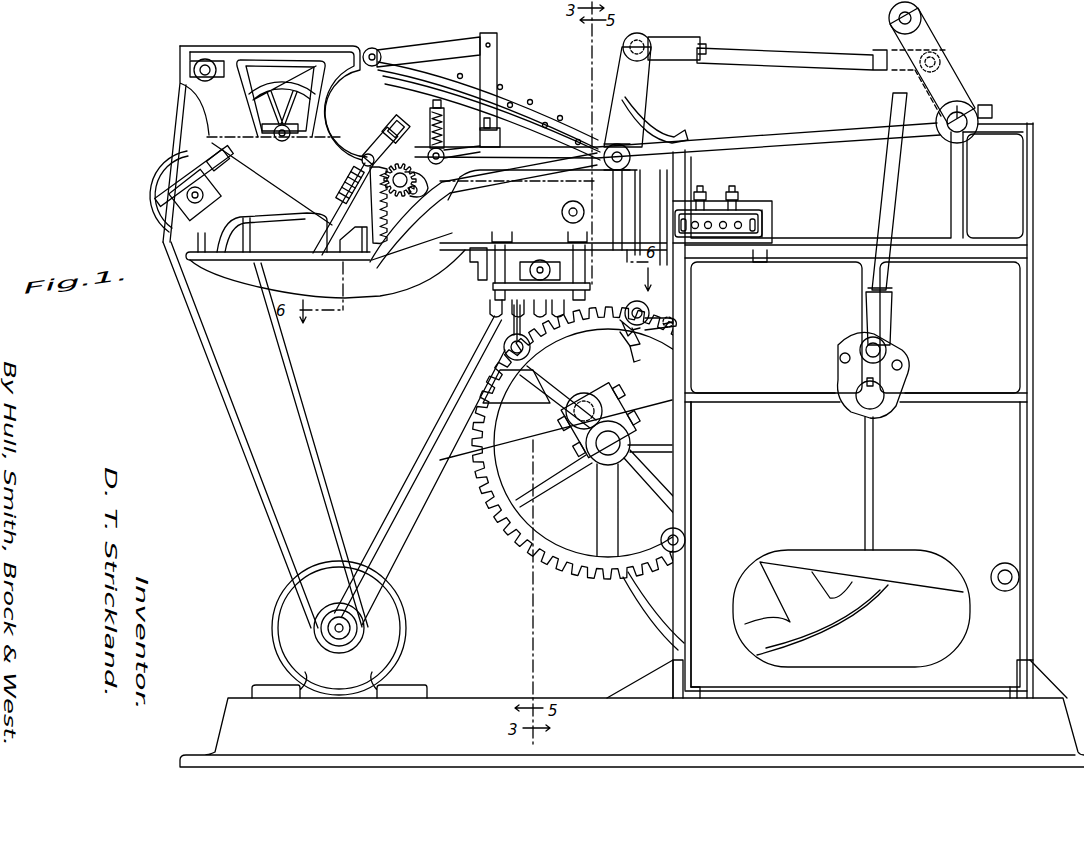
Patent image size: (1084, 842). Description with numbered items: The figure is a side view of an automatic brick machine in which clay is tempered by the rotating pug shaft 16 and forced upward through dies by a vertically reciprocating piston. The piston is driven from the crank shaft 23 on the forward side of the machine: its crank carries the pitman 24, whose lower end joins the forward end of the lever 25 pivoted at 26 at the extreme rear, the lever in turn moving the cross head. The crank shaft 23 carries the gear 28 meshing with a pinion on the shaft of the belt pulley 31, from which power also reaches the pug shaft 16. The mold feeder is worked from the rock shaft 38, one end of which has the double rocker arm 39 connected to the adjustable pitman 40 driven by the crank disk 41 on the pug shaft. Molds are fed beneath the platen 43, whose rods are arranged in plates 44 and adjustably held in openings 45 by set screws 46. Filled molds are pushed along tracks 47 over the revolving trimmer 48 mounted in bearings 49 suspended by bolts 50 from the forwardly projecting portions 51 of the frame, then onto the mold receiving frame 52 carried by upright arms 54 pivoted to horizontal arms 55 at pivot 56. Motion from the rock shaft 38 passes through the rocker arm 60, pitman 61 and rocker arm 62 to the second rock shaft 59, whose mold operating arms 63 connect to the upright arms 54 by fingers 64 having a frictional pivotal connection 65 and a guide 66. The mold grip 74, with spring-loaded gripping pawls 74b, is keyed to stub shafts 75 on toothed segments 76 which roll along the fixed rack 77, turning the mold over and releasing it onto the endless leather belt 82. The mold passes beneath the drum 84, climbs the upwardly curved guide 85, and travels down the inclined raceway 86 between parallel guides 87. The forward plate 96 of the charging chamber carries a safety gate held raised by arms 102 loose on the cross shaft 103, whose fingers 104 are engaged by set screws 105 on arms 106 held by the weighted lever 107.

The pug shaft 16 is at (860, 400).
The crank shaft 23 is at (620, 440).
The pitman 24 is at (680, 489).
The lever 25 is at (890, 572).
The pivot 26 is at (1019, 577).
The gear 28 is at (478, 458).
The belt pulley 31 is at (650, 592).
The rock shaft 38 is at (968, 118).
The double rocker arm 39 is at (938, 35).
The pitman 40 is at (883, 110).
The crank disk 41 is at (840, 358).
The platen 43 is at (728, 222).
The plates 44 is at (718, 220).
The openings 45 is at (770, 212).
The set screws 46 is at (700, 190).
The tracks 47 is at (622, 233).
The trimmer 48 is at (493, 287).
The bearings 49 is at (580, 276).
The bolts 50 is at (560, 258).
The forwardly projecting portions of the main frame 51 is at (553, 217).
The mold receiving frame 52 is at (465, 248).
The upright arms 54 is at (497, 68).
The horizontal arms 55 is at (420, 44).
The pivot 56 is at (374, 50).
The second rock shaft 59 is at (622, 148).
The rocker arm 60 is at (940, 62).
The pitman 61 is at (758, 48).
The rocker arm 62 is at (652, 84).
The mold operating arms 63 is at (470, 160).
The fingers 64 is at (450, 140).
The frictional pivotal connection 65 is at (444, 112).
The guide 66 is at (500, 137).
The mold grip 74 is at (380, 138).
The gripping pawls or dogs 74b is at (406, 118).
The stub shafts 75 is at (466, 200).
The toothed segment 76 is at (388, 250).
The rack 77 is at (356, 177).
The endless leather belt 82 is at (183, 100).
The drum or wheel 84 is at (290, 98).
The upwardly curved guide 85 is at (260, 80).
The inclined raceway 86 is at (525, 98).
The parallel guides 87 is at (660, 127).
The forward plate of the charging chamber 96 is at (690, 349).
The arms 102 is at (676, 330).
The cross shaft 103 is at (637, 302).
The fingers 104 is at (632, 360).
The set screws 105 is at (618, 320).
The arms 106 is at (622, 340).
The weighted lever 107 is at (500, 322).